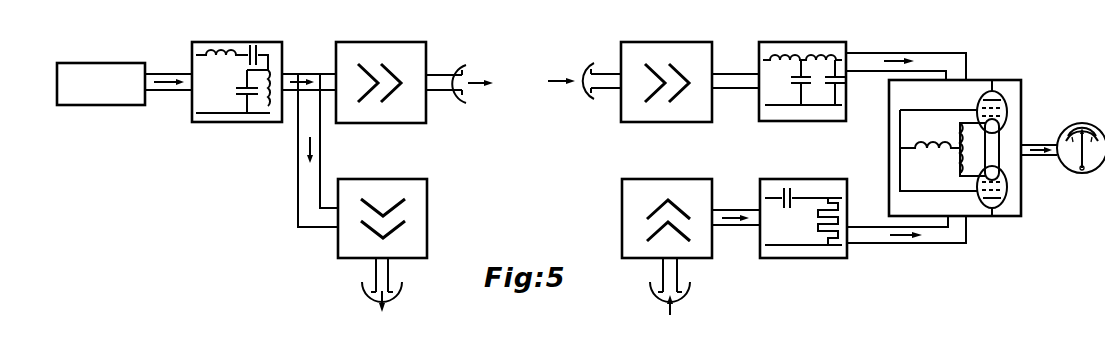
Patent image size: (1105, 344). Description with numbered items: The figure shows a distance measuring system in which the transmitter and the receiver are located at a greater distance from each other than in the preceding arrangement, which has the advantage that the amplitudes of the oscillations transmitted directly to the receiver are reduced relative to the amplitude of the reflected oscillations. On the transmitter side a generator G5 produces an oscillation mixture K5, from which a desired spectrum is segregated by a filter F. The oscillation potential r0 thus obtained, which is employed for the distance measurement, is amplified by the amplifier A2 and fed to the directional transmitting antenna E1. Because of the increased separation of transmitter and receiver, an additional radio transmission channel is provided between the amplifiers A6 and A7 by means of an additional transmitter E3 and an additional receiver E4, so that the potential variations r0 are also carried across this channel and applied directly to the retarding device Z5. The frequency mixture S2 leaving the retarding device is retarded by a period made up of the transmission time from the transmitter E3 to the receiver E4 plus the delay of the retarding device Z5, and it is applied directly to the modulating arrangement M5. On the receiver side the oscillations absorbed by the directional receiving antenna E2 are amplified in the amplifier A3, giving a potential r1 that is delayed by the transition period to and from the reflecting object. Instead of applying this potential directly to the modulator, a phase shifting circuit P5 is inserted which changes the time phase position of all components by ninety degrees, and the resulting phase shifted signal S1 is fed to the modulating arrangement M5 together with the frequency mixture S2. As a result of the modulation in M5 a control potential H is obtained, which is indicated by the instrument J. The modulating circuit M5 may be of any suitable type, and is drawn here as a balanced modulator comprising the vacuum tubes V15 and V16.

The generator G5 is at (85, 63).
The oscillation mixture K5 is at (159, 82).
The filter F is at (229, 42).
The oscillation potential r0 is at (323, 167).
The amplifier A6 is at (370, 40).
The additional transmitter E3 is at (470, 90).
The amplifier A2 is at (360, 182).
The directional transmitting antenna E1 is at (389, 296).
The additional receiver E4 is at (577, 82).
The amplifier A7 is at (655, 42).
The retarding device Z5 is at (786, 42).
The frequency mixture S2 is at (897, 59).
The modulating arrangement M5 is at (996, 82).
The vacuum tube V15 is at (1007, 103).
The vacuum tube V16 is at (1003, 200).
The control potential H is at (1046, 158).
The instrument J is at (1063, 130).
The amplifier A3 is at (645, 181).
The directional receiving antenna E2 is at (676, 296).
The potential r1 is at (735, 229).
The phase shifting circuit P5 is at (787, 181).
The phase shifted potential S1 is at (894, 245).